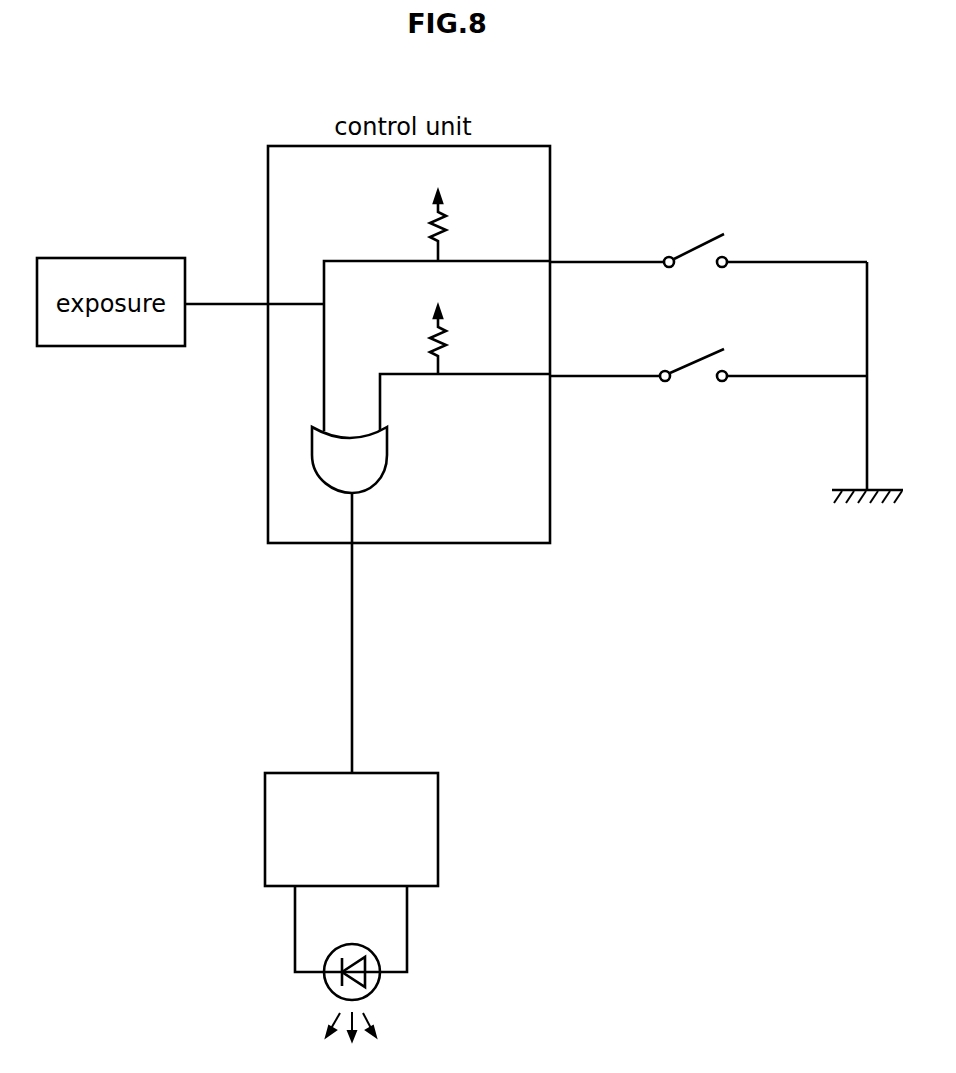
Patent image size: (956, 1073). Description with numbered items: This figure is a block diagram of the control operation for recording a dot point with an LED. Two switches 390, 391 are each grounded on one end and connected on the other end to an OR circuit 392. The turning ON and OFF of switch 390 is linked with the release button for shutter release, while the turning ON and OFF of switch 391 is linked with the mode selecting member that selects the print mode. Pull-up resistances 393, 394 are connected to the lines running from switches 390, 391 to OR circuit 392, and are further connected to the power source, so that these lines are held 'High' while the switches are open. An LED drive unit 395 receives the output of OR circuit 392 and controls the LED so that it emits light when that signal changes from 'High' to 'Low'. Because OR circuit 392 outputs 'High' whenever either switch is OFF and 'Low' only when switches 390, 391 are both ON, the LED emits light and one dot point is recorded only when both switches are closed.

The switch 390 is at (690, 250).
The switch 391 is at (689, 366).
The OR circuit 392 is at (383, 470).
The pull-up resistance 393 is at (445, 222).
The pull-up resistance 394 is at (445, 339).
The LED drive unit 395 is at (438, 827).